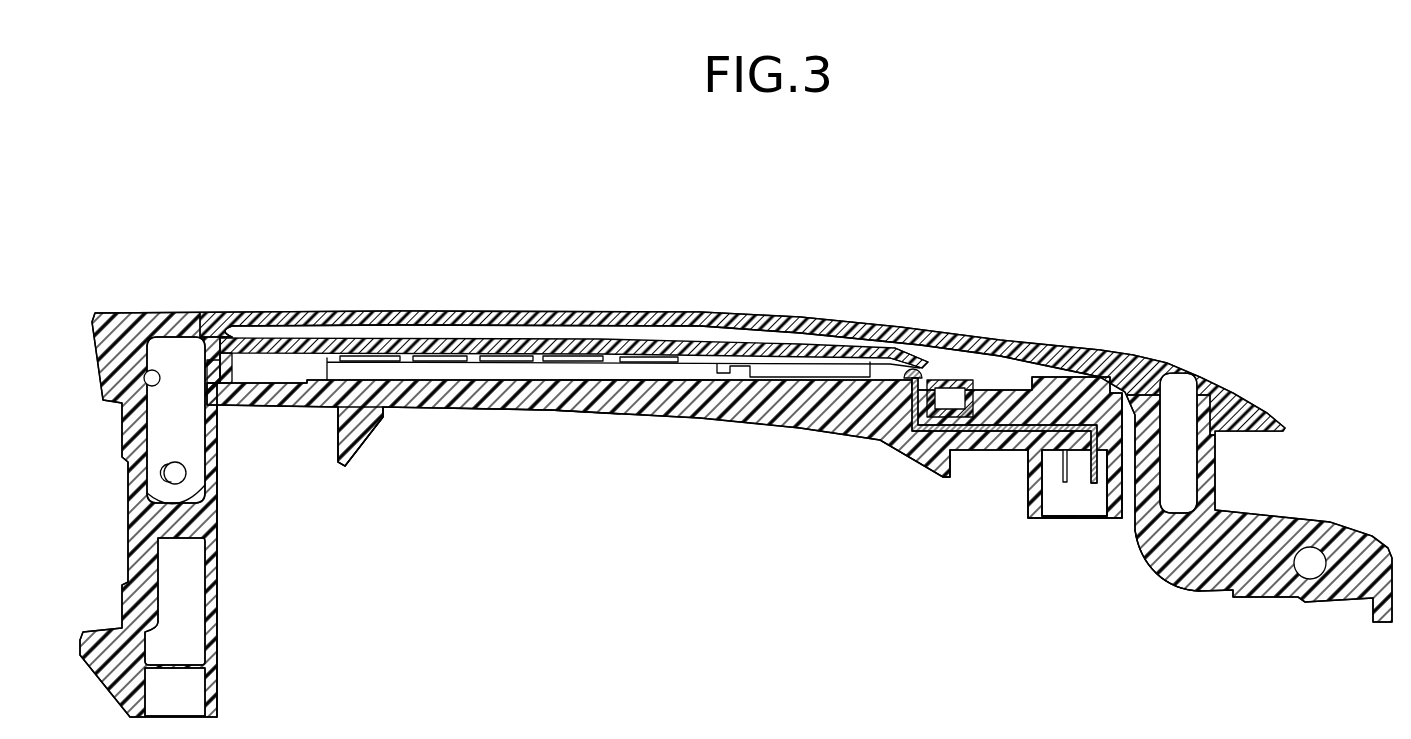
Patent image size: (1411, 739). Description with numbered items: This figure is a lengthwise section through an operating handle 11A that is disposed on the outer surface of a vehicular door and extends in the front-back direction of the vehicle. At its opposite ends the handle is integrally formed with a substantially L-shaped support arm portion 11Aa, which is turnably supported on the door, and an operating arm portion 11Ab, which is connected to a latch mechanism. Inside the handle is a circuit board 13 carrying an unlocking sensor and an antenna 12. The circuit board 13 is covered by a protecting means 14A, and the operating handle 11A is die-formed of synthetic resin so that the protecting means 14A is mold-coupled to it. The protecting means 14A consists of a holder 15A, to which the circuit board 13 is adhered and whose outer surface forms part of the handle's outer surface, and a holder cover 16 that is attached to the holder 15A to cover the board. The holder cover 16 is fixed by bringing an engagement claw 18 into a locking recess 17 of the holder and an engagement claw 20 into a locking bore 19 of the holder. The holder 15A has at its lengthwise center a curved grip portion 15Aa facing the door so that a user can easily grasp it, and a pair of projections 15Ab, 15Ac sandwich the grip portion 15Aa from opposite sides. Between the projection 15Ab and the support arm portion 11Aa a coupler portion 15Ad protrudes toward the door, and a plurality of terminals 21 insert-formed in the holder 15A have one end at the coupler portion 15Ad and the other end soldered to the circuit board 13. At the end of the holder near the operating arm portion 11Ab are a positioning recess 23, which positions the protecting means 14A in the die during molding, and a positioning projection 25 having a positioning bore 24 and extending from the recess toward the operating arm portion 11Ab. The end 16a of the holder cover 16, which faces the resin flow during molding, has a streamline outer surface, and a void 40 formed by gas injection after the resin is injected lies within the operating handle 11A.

The operating handle 11A is at (713, 322).
The support arm portion 11Aa is at (1167, 575).
The operating arm portion 11Ab is at (212, 602).
The antenna 12 is at (612, 368).
The circuit board 13 is at (640, 385).
The protecting means 14A is at (531, 328).
The holder 15A is at (998, 405).
The grip portion 15Aa is at (520, 410).
The projection 15Ab is at (942, 476).
The projection 15Ac is at (345, 464).
The coupler portion 15Ad is at (1113, 500).
The holder cover 16 is at (848, 352).
The end of the holder cover 16a is at (918, 372).
The locking recess 17 is at (958, 432).
The engagement claw 18 is at (1010, 432).
The locking bore 19 is at (229, 370).
The engagement claw 20 is at (207, 367).
The terminals 21 is at (1094, 484).
The positioning recess 23 is at (146, 379).
The positioning bore 24 is at (168, 474).
The positioning projection 25 is at (147, 505).
The void 40 is at (413, 332).